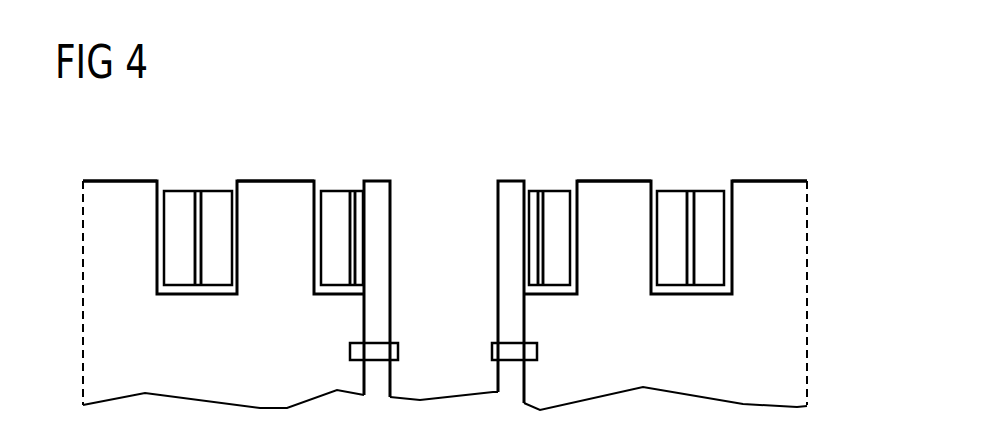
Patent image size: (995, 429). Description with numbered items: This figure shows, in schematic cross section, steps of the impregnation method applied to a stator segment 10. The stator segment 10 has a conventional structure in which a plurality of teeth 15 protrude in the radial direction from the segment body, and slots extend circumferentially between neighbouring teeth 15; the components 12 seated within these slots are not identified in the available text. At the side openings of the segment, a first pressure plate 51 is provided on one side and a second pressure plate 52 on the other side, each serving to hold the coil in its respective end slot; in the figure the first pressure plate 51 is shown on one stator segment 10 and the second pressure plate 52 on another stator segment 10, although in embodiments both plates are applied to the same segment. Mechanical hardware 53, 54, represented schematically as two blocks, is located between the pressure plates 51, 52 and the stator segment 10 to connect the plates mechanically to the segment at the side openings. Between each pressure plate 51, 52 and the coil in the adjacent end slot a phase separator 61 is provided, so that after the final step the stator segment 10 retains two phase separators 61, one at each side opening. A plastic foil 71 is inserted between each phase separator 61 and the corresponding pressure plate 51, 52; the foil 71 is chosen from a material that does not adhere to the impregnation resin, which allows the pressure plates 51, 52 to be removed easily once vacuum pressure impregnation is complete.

The stator segment 10 is at (101, 172).
The teeth 15 is at (131, 188).
The trench 12 is at (180, 202).
The first pressure plate 51 is at (497, 205).
The second pressure plate 52 is at (392, 205).
The phase separator 61 is at (535, 229).
The plastic foil 71 is at (535, 269).
The mechanical hardware 53 is at (527, 350).
The mechanical hardware 54 is at (350, 348).